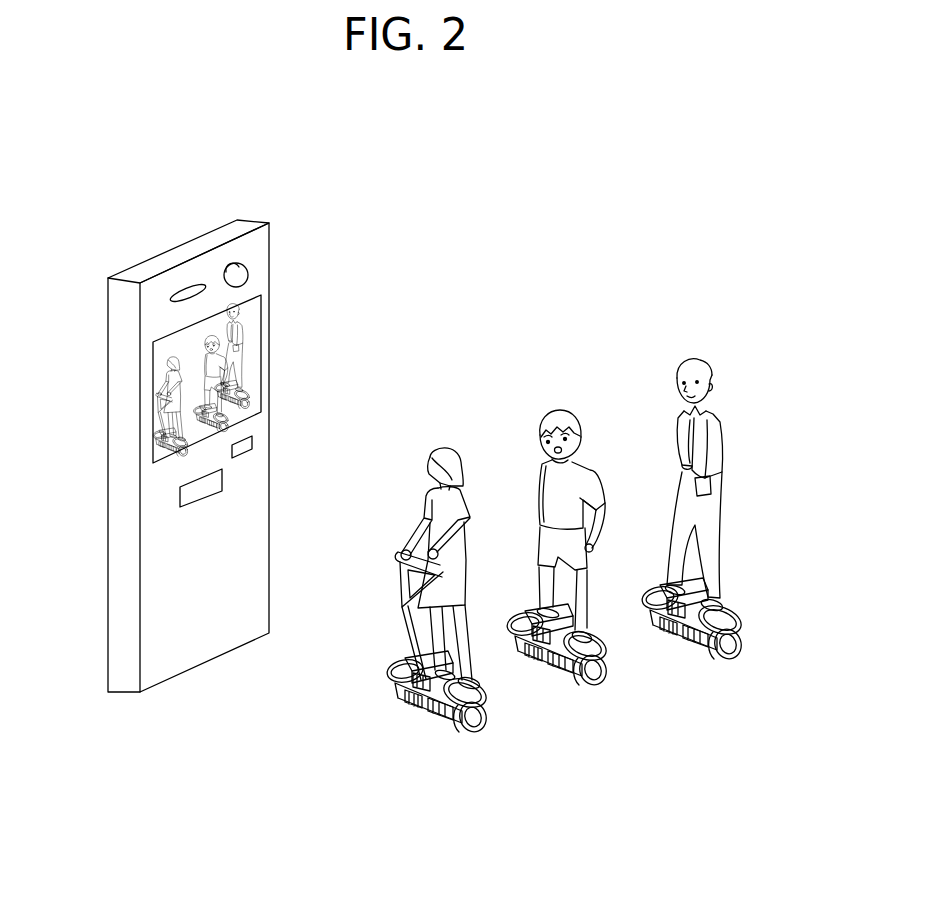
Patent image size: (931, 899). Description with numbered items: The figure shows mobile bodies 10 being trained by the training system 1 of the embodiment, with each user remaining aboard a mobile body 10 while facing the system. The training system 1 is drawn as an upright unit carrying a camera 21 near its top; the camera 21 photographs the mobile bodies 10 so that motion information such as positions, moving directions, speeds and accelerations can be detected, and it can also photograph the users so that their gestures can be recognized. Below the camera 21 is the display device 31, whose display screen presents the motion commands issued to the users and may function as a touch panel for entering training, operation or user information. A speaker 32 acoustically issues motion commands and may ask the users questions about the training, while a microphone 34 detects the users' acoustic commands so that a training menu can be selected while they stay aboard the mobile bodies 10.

The training system 1 is at (110, 589).
The camera 21 is at (235, 270).
The display device 31 is at (255, 320).
The microphone 34 is at (253, 441).
The speaker 32 is at (222, 477).
The mobile body 10 is at (423, 708).